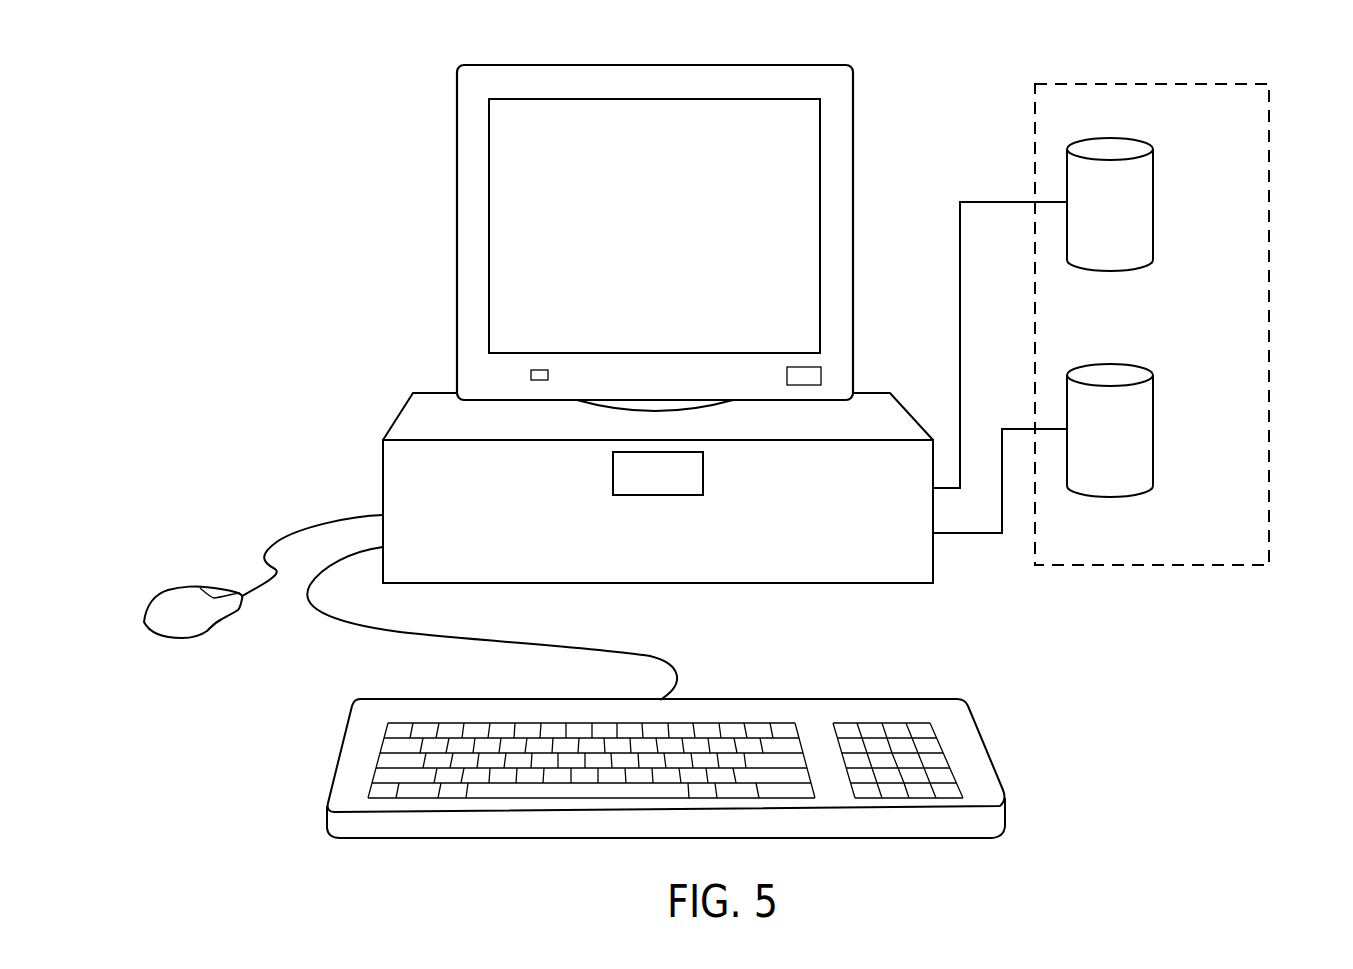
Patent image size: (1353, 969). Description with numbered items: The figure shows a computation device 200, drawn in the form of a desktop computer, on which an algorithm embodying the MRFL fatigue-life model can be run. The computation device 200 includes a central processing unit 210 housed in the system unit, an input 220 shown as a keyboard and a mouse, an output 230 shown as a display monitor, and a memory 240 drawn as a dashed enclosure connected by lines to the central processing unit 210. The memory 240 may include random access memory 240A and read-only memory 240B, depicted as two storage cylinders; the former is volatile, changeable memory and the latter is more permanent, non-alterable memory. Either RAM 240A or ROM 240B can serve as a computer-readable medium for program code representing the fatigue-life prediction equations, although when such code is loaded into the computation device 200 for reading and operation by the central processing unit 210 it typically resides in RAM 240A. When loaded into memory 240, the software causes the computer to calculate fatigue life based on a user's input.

The computation device 200 is at (320, 187).
The central processing unit 210 is at (703, 474).
The input 220 is at (200, 643).
The output 230 is at (650, 118).
The memory 240 is at (1269, 140).
The random access memory (RAM) 240A is at (1154, 203).
The read-only memory (ROM) 240B is at (1154, 430).